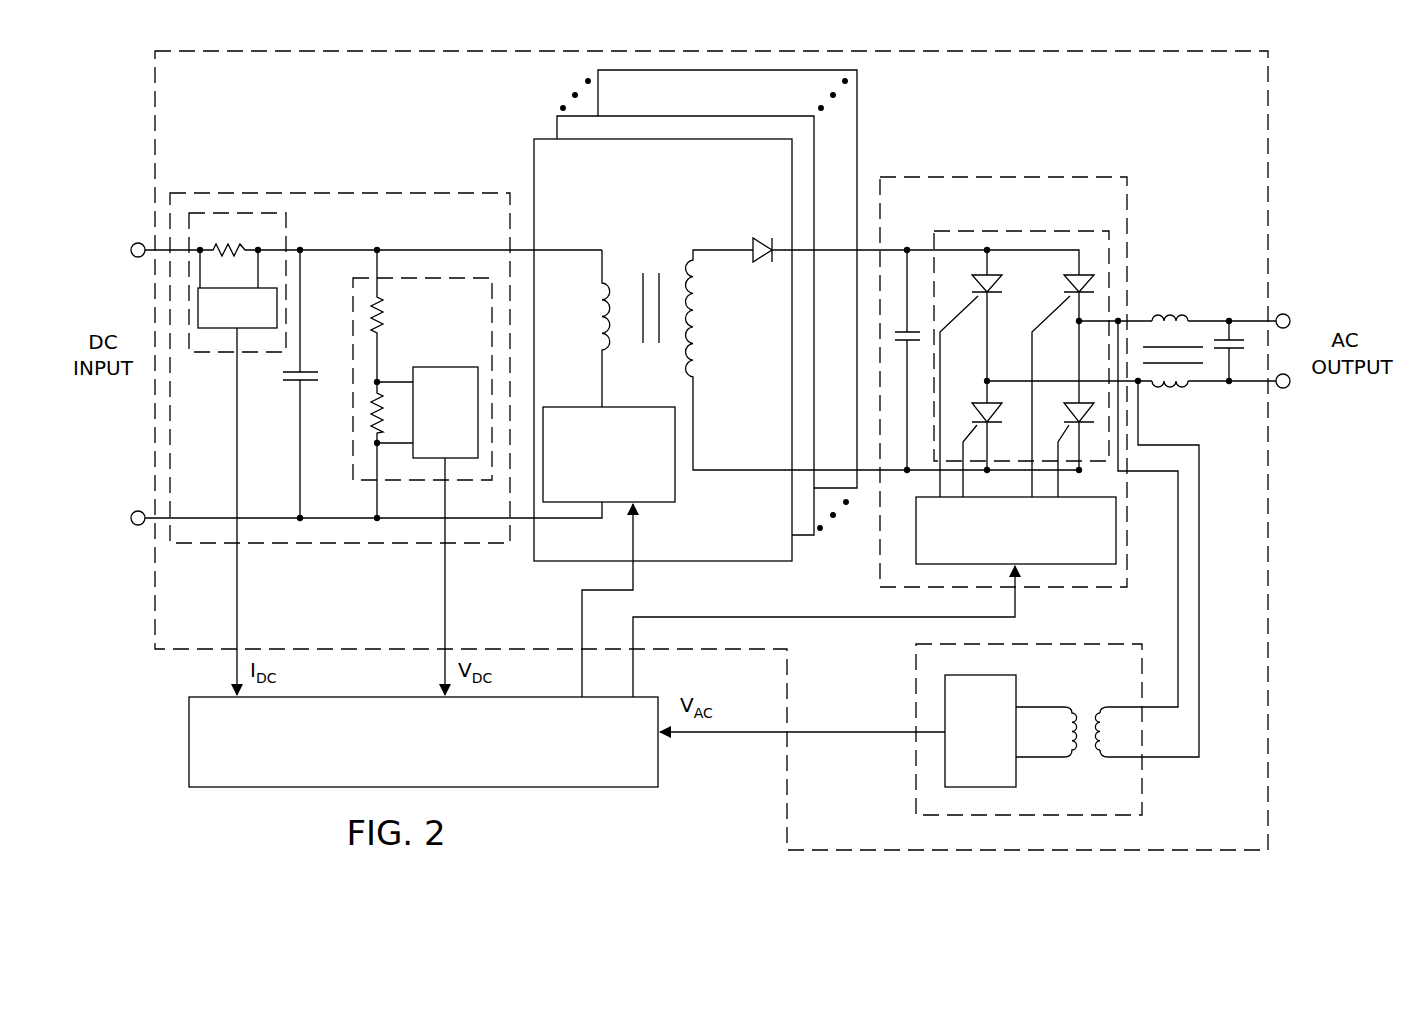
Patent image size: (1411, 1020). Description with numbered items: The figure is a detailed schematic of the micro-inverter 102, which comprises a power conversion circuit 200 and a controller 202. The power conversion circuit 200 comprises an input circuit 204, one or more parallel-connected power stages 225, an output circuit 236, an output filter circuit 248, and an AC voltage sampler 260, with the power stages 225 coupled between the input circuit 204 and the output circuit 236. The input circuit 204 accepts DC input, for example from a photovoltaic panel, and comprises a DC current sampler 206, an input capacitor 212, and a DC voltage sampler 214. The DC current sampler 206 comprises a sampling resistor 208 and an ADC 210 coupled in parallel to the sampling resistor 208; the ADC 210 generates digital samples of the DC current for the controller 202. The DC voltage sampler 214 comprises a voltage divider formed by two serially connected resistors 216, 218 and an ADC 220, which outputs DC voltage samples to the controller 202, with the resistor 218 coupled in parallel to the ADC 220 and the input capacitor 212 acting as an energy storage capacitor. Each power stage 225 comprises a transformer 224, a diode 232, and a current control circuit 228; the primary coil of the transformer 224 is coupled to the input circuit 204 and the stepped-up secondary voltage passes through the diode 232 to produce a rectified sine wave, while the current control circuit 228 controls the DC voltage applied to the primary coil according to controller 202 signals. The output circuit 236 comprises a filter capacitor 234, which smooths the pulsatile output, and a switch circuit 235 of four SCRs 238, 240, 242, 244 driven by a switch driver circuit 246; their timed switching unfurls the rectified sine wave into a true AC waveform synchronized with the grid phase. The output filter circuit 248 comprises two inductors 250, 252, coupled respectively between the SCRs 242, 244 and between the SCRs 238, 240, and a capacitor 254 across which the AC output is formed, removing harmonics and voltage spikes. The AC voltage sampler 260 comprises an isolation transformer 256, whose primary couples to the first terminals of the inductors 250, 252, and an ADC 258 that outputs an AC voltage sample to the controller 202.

The power conversion circuit 200 is at (1268, 85).
The micro-inverter 102 is at (313, 122).
The controller 202 is at (658, 763).
The input circuit 204 is at (450, 193).
The DC current sampler 206 is at (288, 220).
The sampling resistor 208 is at (232, 248).
The ADC 210 is at (198, 303).
The input capacitor 212 is at (298, 380).
The DC voltage sampler 214 is at (428, 278).
The resistor 216 is at (384, 305).
The resistor 218 is at (370, 408).
The ADC 220 is at (461, 440).
The transformer 224 is at (648, 250).
The power stage 225 is at (727, 313).
The current control circuit 228 is at (558, 403).
The diode 232 is at (756, 258).
The filter capacitor 234 is at (920, 330).
The switch circuit 235 is at (1110, 238).
The output circuit 236 is at (1105, 177).
The SCR 238 is at (985, 272).
The SCR 240 is at (983, 400).
The SCR 242 is at (1080, 272).
The SCR 244 is at (1075, 400).
The switch driver circuit 246 is at (1080, 565).
The output filter circuit 248 is at (1168, 292).
The inductor 250 is at (1168, 318).
The inductor 252 is at (1160, 385).
The capacitor 254 is at (1238, 335).
The isolation transformer 256 is at (1086, 766).
The ADC 258 is at (945, 770).
The AC voltage sampler 260 is at (915, 677).